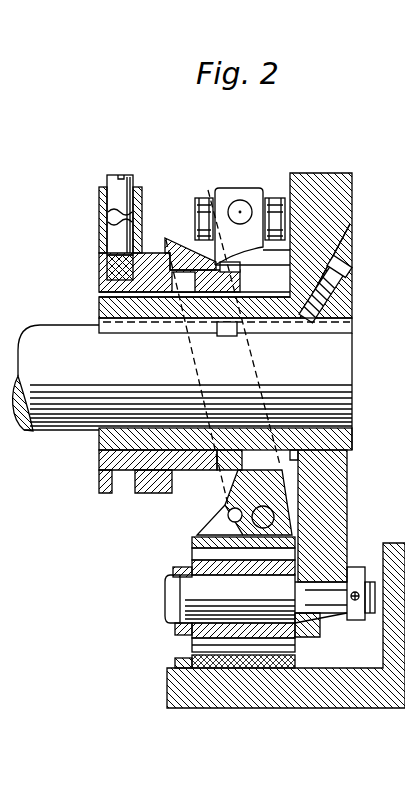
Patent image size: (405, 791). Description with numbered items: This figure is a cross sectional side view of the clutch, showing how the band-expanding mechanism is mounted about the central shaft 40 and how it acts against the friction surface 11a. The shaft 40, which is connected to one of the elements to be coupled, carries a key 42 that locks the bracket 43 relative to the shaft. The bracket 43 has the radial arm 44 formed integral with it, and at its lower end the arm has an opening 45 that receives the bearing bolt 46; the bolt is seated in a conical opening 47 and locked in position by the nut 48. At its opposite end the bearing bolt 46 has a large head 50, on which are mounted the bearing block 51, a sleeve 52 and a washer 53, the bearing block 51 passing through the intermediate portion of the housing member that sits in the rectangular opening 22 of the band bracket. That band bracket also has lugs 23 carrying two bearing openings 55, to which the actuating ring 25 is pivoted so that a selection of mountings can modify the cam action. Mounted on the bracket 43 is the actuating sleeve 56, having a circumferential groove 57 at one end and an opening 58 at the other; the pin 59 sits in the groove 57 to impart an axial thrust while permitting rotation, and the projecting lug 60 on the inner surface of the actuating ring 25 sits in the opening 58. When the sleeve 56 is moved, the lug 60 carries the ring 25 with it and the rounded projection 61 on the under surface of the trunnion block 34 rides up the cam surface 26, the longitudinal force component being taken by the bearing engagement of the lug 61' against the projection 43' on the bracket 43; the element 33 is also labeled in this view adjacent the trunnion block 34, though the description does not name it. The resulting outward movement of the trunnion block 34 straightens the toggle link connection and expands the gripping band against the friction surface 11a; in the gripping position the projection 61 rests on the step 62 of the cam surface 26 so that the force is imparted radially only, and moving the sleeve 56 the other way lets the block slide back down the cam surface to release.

The friction surface 11a is at (247, 677).
The rectangular opening 22 is at (200, 537).
The lugs 23 is at (222, 522).
The actuating ring 25 is at (253, 352).
The cam surface 26 is at (213, 252).
The pin 33 is at (241, 212).
The trunnion block 34 is at (248, 194).
The shaft 40 is at (55, 426).
The key 42 is at (133, 329).
The bracket 43 is at (206, 450).
The projection 43' is at (239, 245).
The radial arm 44 is at (333, 503).
The opening 45 is at (305, 580).
The bearing bolt 46 is at (216, 589).
The conical opening 47 is at (313, 630).
The nut 48 is at (357, 568).
The large head 50 is at (168, 579).
The bearing block 51 is at (213, 557).
The sleeve 52 is at (174, 631).
The washer 53 is at (190, 640).
The bearing openings 55 is at (232, 508).
The actuating sleeve 56 is at (107, 464).
The circumferential groove 57 is at (122, 482).
The opening 58 is at (100, 292).
The pin 59 is at (118, 240).
The projecting lug 60 is at (211, 200).
The rounded projection 61 is at (335, 265).
The lug 61' is at (338, 281).
The step 62 is at (186, 243).